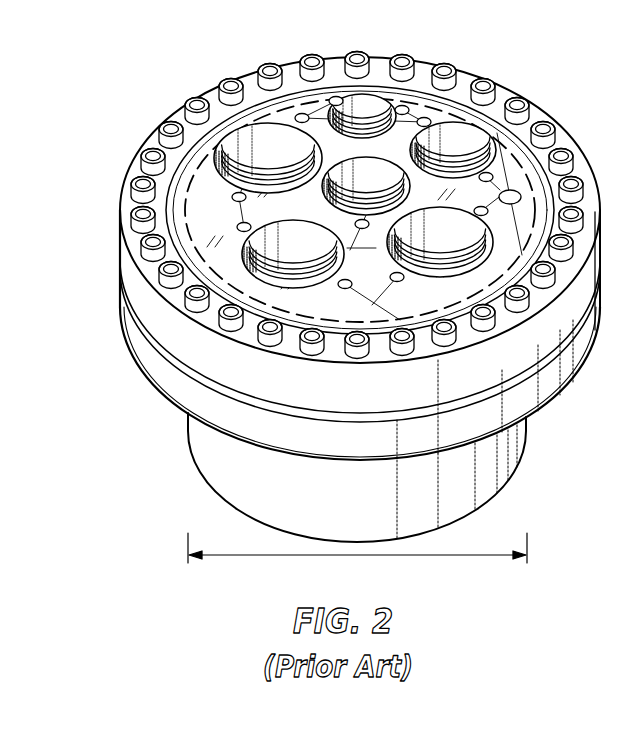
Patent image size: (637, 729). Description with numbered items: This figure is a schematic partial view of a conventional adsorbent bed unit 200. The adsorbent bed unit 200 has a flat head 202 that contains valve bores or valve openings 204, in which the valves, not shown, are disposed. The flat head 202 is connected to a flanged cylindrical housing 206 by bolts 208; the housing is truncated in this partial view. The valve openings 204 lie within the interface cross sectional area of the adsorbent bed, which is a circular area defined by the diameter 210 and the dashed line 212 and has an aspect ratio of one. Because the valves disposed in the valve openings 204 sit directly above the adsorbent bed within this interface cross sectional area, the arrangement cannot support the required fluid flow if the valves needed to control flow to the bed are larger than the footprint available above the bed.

The adsorbent bed unit 200 is at (101, 37).
The flat head 202 is at (137, 288).
The valve openings 204 is at (293, 247).
The flanged cylindrical housing 206 is at (220, 470).
The bolts 208 is at (167, 126).
The diameter 210 is at (431, 560).
The dashed line 212 is at (233, 130).